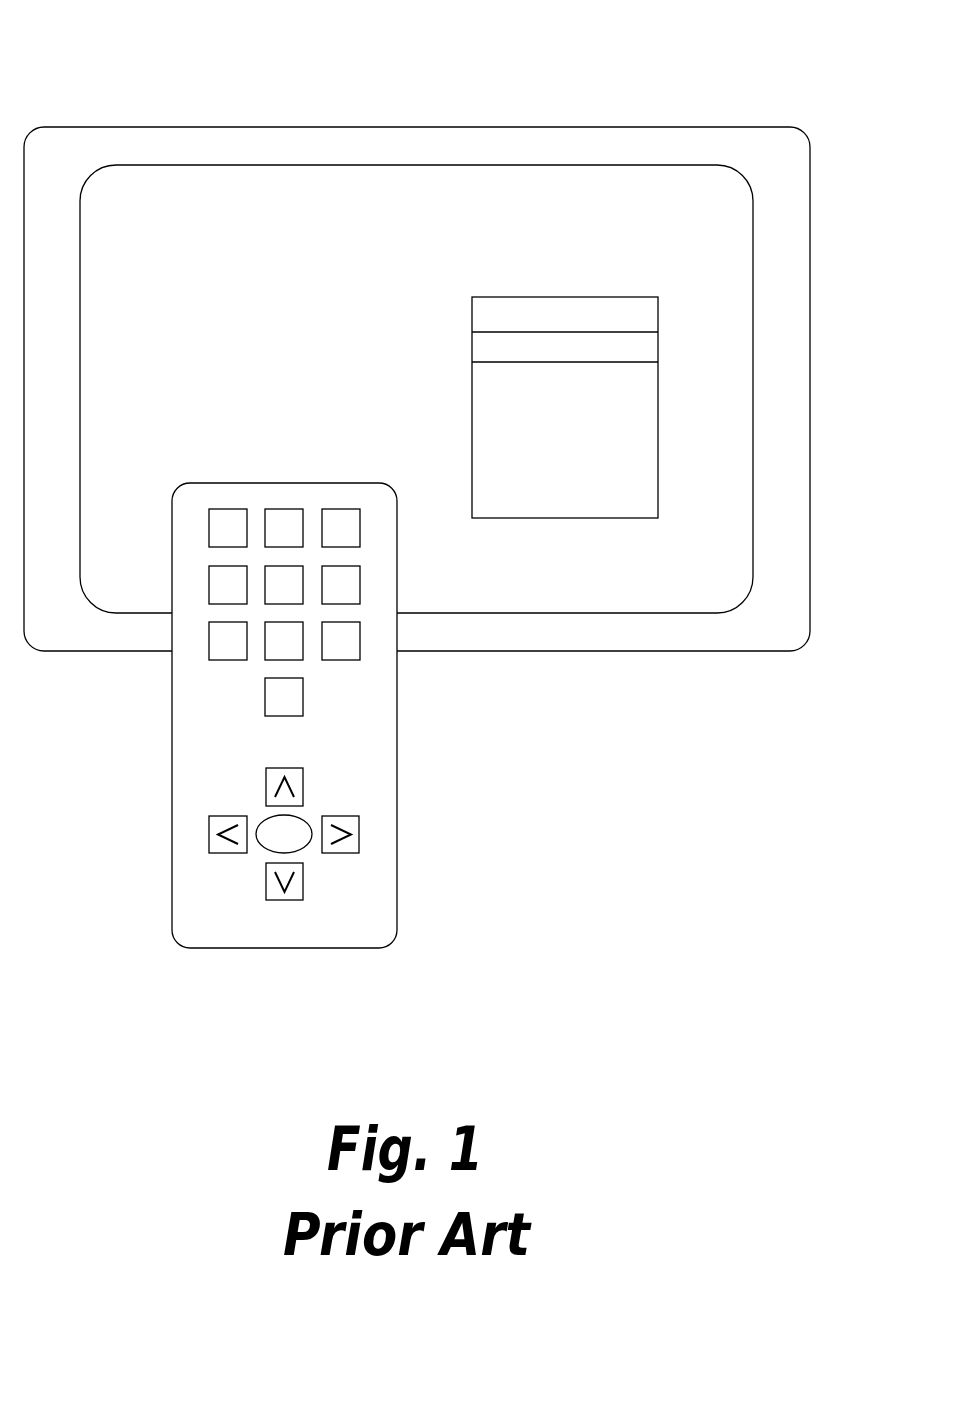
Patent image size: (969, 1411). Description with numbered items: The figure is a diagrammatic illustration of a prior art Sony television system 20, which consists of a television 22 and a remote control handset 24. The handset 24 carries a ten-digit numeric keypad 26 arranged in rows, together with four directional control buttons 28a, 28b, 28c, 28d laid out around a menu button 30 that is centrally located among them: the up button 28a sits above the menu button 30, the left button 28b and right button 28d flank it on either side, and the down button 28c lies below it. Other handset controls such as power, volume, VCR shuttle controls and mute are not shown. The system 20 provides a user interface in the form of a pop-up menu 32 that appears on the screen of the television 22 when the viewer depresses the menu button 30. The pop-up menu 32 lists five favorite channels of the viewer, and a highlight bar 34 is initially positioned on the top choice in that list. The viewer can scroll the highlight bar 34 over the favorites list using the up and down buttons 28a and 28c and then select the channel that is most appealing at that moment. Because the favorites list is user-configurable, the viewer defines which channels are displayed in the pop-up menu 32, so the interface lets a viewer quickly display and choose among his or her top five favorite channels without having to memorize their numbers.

The television system 20 is at (586, 91).
The television 22 is at (773, 165).
The remote control handset 24 is at (397, 742).
The numeric keypad 26 is at (209, 583).
The up directional control button 28a is at (287, 768).
The left directional control button 28b is at (209, 833).
The down directional control button 28c is at (283, 900).
The right directional control button 28d is at (358, 833).
The menu button 30 is at (294, 827).
The pop-up menu 32 is at (599, 381).
The highlight bar 34 is at (650, 343).